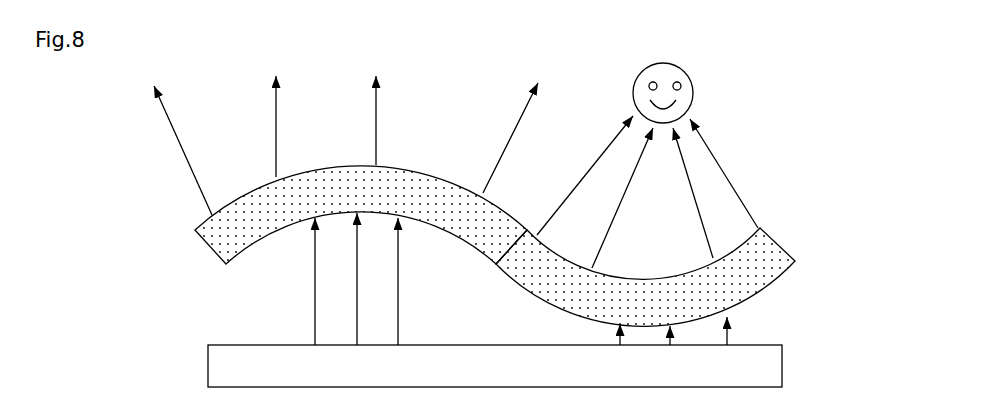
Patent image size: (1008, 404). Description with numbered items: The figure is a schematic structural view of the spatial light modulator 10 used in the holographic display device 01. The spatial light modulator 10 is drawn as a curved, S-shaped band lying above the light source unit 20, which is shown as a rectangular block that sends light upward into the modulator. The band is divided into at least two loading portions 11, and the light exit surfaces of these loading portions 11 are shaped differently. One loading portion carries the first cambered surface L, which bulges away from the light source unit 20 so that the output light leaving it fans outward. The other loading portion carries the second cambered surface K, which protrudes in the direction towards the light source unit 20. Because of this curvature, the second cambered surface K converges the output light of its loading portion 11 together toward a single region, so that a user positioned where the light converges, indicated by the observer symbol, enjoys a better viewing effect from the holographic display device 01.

The holographic display device 01 is at (829, 158).
The spatial light modulator 10 is at (212, 252).
The loading portion 11 is at (757, 273).
The light source unit 20 is at (758, 363).
The first cambered surface L is at (437, 177).
The second cambered surface K is at (643, 278).